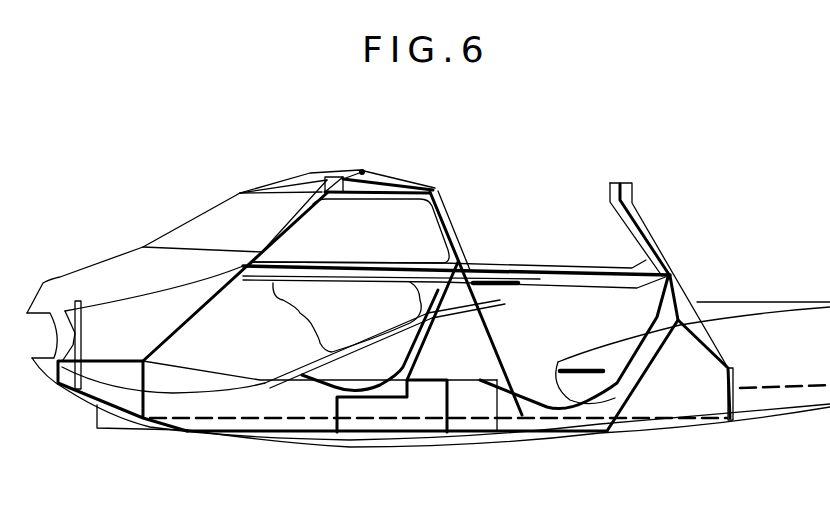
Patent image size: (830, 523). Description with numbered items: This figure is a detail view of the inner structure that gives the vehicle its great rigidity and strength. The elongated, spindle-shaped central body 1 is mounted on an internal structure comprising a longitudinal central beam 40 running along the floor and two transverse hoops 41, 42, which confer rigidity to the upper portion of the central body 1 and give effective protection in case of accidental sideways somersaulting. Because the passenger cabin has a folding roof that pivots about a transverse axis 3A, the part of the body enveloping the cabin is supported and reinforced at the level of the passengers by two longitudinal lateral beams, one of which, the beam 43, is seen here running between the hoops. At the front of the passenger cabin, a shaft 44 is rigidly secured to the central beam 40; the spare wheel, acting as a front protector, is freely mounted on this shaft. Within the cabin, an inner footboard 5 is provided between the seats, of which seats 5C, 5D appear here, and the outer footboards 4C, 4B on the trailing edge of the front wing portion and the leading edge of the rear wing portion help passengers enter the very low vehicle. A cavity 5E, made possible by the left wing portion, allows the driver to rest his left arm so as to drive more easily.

The central body 1 is at (114, 277).
The transverse axis 3A is at (365, 171).
The outer footboard 4B is at (585, 368).
The outer footboard 4C is at (488, 279).
The inner footboard 5 is at (452, 363).
The seat 5C is at (327, 382).
The seat 5D is at (543, 407).
The cavity 5E is at (378, 302).
The longitudinal central beam 40 is at (468, 397).
The transverse hoop 41 is at (444, 222).
The transverse hoop 42 is at (647, 260).
The longitudinal lateral beam 43 is at (550, 282).
The shaft 44 is at (74, 302).